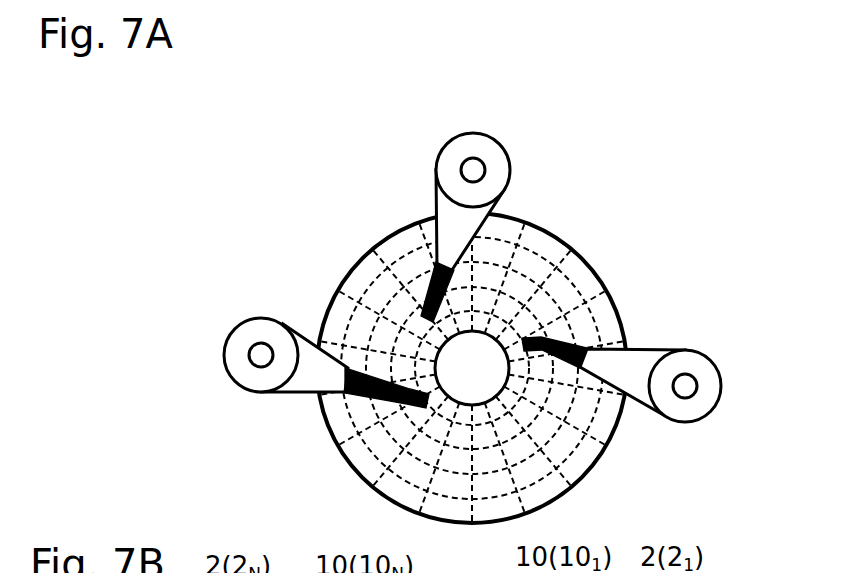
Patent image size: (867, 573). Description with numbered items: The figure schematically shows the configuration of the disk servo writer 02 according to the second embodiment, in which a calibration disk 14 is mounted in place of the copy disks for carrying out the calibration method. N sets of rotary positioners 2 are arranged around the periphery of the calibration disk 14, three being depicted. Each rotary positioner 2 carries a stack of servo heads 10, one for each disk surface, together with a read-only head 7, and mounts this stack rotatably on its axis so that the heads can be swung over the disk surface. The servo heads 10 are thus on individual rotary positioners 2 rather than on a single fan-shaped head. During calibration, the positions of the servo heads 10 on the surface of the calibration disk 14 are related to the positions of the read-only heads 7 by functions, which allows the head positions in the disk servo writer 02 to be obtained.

The disk servo writer 02 is at (722, 115).
The rotary positioner 2 is at (440, 162).
The servo head 10 is at (513, 362).
The read-only head 7 is at (542, 274).
The calibration disk 14 is at (463, 510).